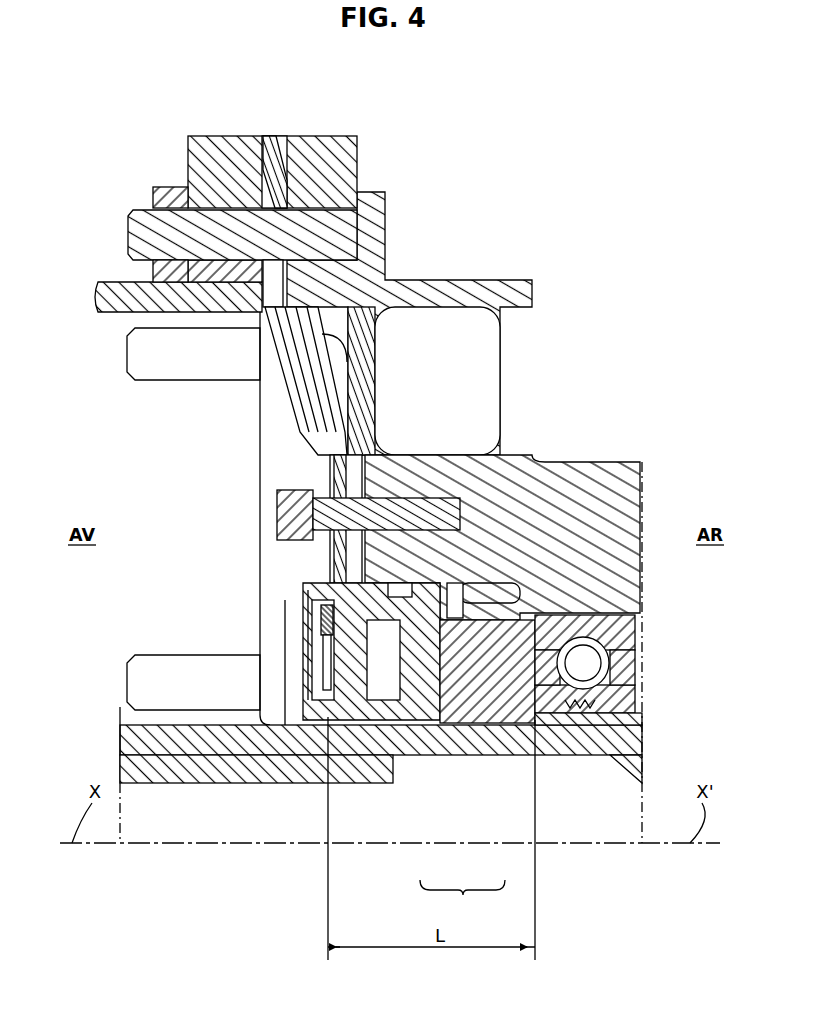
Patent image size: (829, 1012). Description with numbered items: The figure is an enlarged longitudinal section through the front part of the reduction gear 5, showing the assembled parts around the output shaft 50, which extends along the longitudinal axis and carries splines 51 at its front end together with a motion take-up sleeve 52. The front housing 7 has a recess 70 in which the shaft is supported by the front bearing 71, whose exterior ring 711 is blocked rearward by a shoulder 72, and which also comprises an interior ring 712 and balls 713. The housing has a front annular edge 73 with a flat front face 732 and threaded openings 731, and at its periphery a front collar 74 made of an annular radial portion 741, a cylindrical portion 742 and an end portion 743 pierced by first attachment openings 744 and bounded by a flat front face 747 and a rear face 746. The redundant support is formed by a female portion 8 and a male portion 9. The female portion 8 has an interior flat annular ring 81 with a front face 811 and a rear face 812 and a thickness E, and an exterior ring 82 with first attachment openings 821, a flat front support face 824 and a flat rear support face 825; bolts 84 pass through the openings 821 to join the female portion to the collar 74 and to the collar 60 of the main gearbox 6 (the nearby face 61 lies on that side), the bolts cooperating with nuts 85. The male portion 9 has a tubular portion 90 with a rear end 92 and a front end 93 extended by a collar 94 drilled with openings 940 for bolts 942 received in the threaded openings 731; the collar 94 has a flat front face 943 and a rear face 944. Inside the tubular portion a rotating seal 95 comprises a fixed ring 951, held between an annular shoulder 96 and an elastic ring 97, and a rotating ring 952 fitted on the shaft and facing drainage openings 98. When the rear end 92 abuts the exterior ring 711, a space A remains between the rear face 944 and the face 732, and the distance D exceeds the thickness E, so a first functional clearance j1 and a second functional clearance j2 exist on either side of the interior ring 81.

The reduction gear 5 is at (598, 210).
The main gearbox 6 is at (182, 162).
The collar 60 is at (215, 172).
The nut bearing face 61 is at (215, 205).
The front housing 7 is at (540, 386).
The recess 70 is at (540, 530).
The front bearing 71 is at (622, 679).
The exterior ring 711 is at (595, 632).
The interior ring 712 is at (600, 695).
The balls 713 is at (585, 668).
The shoulder 72 is at (560, 610).
The front annular edge 73 is at (405, 520).
The threaded openings 731 is at (460, 512).
The flat front face 732 is at (310, 500).
The front collar 74 is at (505, 280).
The annular radial portion 741 is at (520, 360).
The cylindrical portion 742 is at (445, 295).
The end portion 743 is at (318, 162).
The first attachment openings 744 is at (345, 200).
The rear face 746 is at (360, 160).
The flat front face 747 is at (262, 172).
The female portion 8 is at (292, 406).
The interior flat annular ring 81 is at (370, 485).
The front face 811 is at (325, 468).
The rear face 812 is at (400, 500).
The exterior peripheral flat annular ring 82 is at (279, 172).
The first attachment openings 821 is at (268, 332).
The flat front support face 824 is at (243, 172).
The flat rear support face 825 is at (292, 162).
The bolts 84 is at (140, 236).
The nuts 85 is at (160, 198).
The male portion 9 is at (300, 600).
The tubular portion 90 is at (370, 620).
The rear end 92 is at (500, 592).
The front end 93 is at (287, 690).
The collar 94 is at (330, 475).
The openings 940 is at (335, 560).
The bolts 942 is at (310, 530).
The flat front face 943 is at (330, 575).
The rear face 944 is at (370, 478).
The rotating seal 95 is at (462, 899).
The fixed ring 951 is at (410, 690).
The rotating ring 952 is at (460, 650).
The annular shoulder 96 is at (395, 660).
The elastic ring 97 is at (326, 680).
The drainage openings 98 is at (555, 680).
The output shaft 50 is at (600, 758).
The splines 51 is at (240, 752).
The motion take-up sleeve 52 is at (175, 755).
The thickness E is at (348, 480).
The space A is at (366, 452).
The distance D is at (345, 540).
The first functional clearance j1 is at (335, 490).
The second functional clearance j2 is at (360, 470).